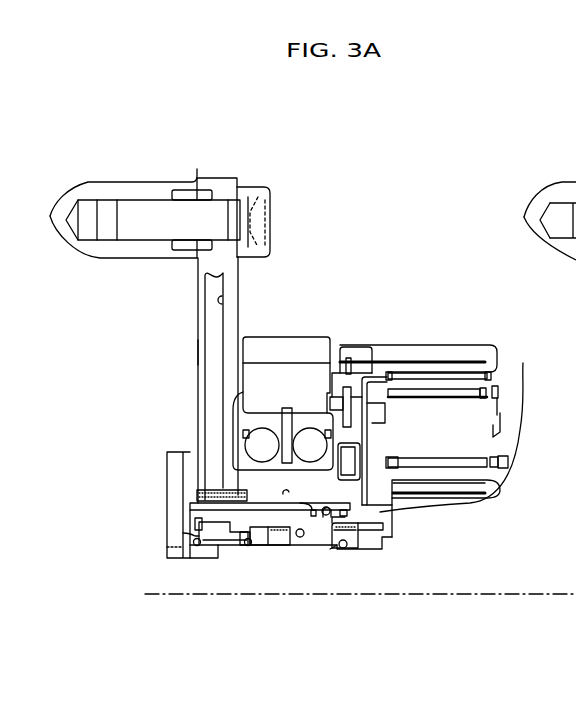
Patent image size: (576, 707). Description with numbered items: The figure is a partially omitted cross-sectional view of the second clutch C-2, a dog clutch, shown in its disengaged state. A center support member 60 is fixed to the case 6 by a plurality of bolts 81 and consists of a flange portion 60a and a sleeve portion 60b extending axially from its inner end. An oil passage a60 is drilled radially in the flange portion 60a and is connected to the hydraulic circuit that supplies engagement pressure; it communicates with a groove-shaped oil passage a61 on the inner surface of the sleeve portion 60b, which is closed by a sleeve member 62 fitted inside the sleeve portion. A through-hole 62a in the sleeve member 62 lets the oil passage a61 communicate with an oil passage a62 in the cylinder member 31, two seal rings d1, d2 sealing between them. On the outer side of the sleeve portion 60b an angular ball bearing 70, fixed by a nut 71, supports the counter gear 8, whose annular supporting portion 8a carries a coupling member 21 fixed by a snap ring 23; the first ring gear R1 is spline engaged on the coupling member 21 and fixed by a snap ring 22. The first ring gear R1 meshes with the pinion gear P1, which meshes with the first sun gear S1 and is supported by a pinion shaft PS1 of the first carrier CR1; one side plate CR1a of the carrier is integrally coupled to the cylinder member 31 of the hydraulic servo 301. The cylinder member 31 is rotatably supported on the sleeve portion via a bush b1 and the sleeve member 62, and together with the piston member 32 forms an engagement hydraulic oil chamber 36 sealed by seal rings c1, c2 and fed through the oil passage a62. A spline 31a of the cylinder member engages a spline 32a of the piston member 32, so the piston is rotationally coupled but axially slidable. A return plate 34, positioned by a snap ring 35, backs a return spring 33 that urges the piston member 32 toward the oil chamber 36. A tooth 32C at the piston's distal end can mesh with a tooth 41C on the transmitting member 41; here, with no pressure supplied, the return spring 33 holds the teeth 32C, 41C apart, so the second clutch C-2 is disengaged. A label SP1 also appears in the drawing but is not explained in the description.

The case 6 is at (145, 184).
The center support member 60 is at (226, 182).
The bolts 81 is at (269, 190).
The oil passage a60 is at (222, 304).
The flange portion 60a is at (198, 353).
The counter gear 8 is at (300, 338).
The angular ball bearing 70 is at (283, 408).
The snap ring 22 is at (340, 374).
The snap ring 23 is at (333, 405).
The coupling member 21 is at (349, 360).
The side plate CR1a is at (383, 383).
The spring SP1 is at (441, 305).
The first ring gear R1 is at (470, 347).
The pinion gear P1 is at (497, 392).
The first carrier CR1 is at (504, 447).
The pinion shaft PS1 is at (505, 456).
The first sun gear S1 is at (484, 500).
The annular supporting portion 8a is at (360, 417).
The nut 71 is at (358, 468).
The sleeve portion 60b is at (287, 445).
The sleeve member 62 is at (264, 458).
The oil passage a61 is at (289, 492).
The seal ring d2 is at (326, 508).
The seal ring d1 is at (331, 510).
The through-hole 62a is at (333, 521).
The oil passage a62 is at (334, 531).
The cylinder member 31 is at (346, 538).
The seal ring c1 is at (346, 548).
The engagement hydraulic oil chamber 36 is at (333, 551).
The seal ring c2 is at (300, 538).
The spline 32a is at (277, 538).
The piston member 32 is at (267, 558).
The spline 31a is at (241, 535).
The return spring 33 is at (229, 545).
The tooth 32C is at (198, 557).
The second clutch C-2 is at (162, 559).
The tooth 41C is at (165, 550).
The return plate 34 is at (195, 536).
The snap ring 35 is at (196, 523).
The bush b1 is at (207, 506).
The transmitting member 41 is at (167, 474).
The hydraulic servo 301 is at (310, 600).